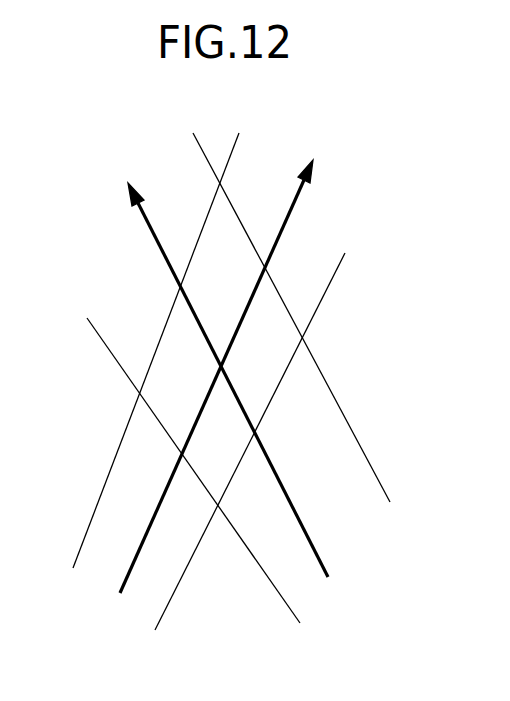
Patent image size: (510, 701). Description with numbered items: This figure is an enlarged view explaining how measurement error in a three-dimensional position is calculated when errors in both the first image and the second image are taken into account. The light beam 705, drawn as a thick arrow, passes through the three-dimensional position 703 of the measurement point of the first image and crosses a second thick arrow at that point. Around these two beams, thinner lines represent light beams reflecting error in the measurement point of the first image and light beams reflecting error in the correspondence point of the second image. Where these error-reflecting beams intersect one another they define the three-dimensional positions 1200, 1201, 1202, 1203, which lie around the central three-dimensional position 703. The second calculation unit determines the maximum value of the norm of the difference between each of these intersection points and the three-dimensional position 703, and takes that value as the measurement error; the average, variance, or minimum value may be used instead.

The light beam 705 is at (215, 368).
The three-dimensional position 703 is at (222, 365).
The three-dimensional position 1201 is at (220, 182).
The three-dimensional position 1202 is at (303, 340).
The three-dimensional position 1203 is at (140, 392).
The three-dimensional position 1200 is at (217, 508).